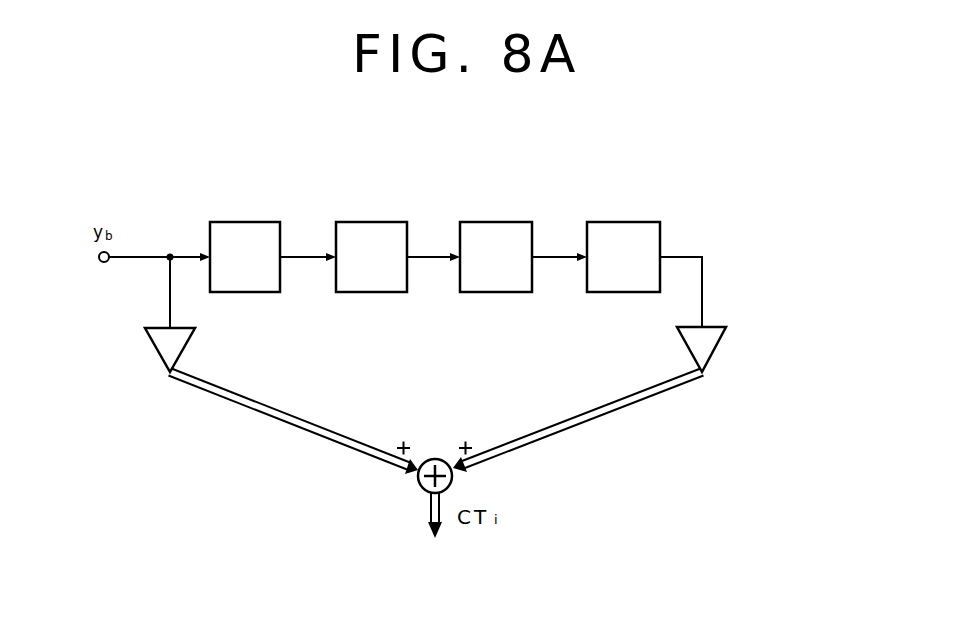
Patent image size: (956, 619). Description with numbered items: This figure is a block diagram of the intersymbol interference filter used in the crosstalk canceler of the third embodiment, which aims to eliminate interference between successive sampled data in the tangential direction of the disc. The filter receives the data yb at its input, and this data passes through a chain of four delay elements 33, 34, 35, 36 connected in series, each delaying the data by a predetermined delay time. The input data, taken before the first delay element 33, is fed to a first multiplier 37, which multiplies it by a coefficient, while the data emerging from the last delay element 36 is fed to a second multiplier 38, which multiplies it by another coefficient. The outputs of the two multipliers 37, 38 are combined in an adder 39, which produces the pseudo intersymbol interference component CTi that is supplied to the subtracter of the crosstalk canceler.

The delay element 33 is at (243, 220).
The delay element 34 is at (370, 220).
The delay element 35 is at (496, 220).
The delay element 36 is at (622, 220).
The multiplier 37 is at (190, 342).
The multiplier 38 is at (718, 341).
The adder 39 is at (453, 478).